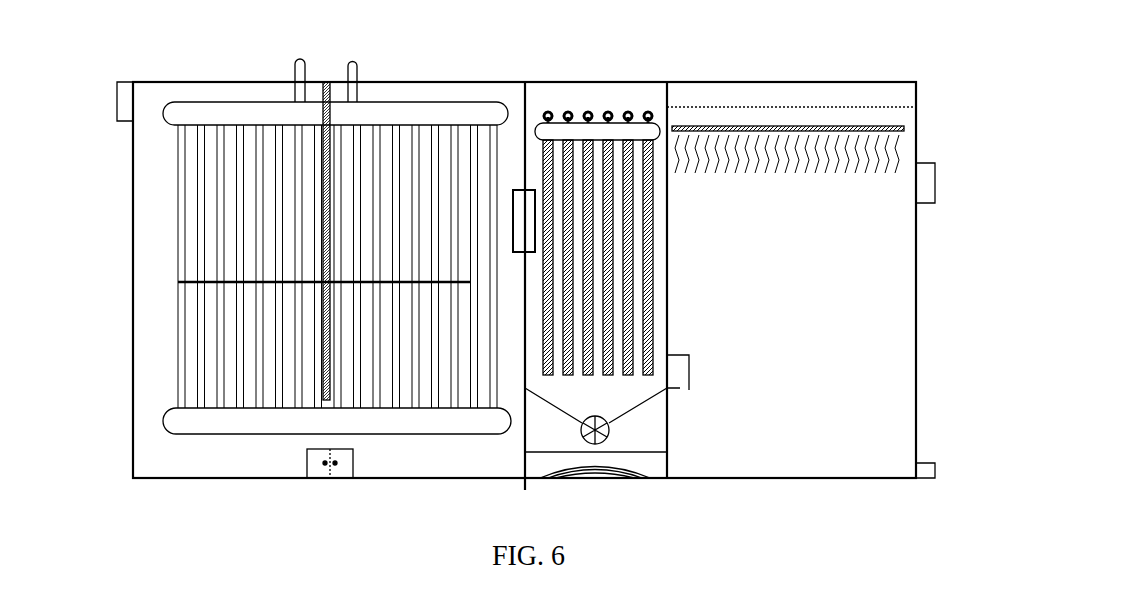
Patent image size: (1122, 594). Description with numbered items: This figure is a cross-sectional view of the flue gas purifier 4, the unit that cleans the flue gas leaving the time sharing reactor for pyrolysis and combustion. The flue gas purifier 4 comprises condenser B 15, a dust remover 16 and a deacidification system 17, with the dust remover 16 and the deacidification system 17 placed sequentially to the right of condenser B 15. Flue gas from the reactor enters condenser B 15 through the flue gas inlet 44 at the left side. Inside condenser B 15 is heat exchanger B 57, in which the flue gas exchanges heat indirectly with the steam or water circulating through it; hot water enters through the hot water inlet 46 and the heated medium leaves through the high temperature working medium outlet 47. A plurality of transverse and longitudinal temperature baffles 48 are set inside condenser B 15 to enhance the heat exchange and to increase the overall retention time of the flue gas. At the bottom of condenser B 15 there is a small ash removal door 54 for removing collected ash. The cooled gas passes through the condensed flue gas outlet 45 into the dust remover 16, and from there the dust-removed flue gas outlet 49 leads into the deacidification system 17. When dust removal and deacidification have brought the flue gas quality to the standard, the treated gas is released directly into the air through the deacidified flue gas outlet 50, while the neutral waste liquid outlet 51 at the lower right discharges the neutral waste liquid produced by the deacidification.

The flue gas purifier 4 is at (157, 82).
The flue gas inlet 44 is at (117, 100).
The heat exchanger B 57 is at (212, 112).
The condenser B 15 is at (260, 93).
The high temperature working medium outlet 47 is at (298, 60).
The temperature baffles 48 is at (327, 82).
The hot water inlet 46 is at (353, 62).
The condensed flue gas outlet 45 is at (516, 190).
The dust remover 16 is at (602, 98).
The deacidification system 17 is at (793, 98).
The deacidified flue gas outlet 50 is at (935, 180).
The neutral waste liquid outlet 51 is at (935, 468).
The dust-removed flue gas outlet 49 is at (680, 390).
The small ash removal door 54 is at (330, 478).